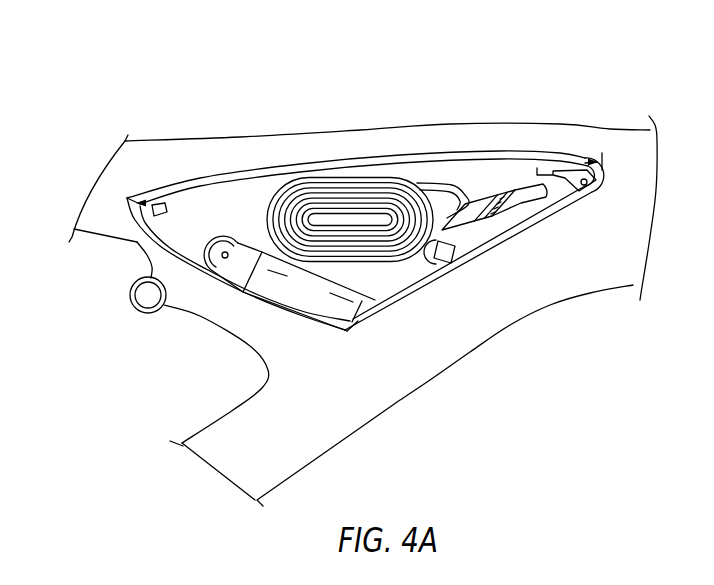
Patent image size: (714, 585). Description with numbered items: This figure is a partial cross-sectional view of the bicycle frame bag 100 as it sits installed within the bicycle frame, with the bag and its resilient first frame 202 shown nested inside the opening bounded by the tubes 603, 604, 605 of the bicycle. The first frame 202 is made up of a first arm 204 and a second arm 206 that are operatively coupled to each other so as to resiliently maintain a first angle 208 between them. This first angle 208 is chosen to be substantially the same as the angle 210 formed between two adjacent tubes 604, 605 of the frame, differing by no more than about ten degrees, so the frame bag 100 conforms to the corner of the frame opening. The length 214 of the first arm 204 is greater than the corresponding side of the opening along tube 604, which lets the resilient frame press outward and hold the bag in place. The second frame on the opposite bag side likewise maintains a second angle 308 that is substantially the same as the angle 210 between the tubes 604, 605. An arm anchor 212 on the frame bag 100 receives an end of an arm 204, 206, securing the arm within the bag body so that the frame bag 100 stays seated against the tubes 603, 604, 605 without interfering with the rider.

The bicycle frame bag 100 is at (128, 242).
The first frame 202 is at (410, 300).
The first arm 204 is at (497, 167).
The second arm 206 is at (520, 232).
The first angle 208 is at (584, 187).
The angle between two adjacent tubes 210 is at (591, 183).
The arm anchor 212 is at (348, 331).
The length of the first arm 214 is at (364, 176).
The second angle 308 is at (572, 106).
The tube 603 is at (197, 316).
The tube 604 is at (389, 138).
The tube 605 is at (530, 307).